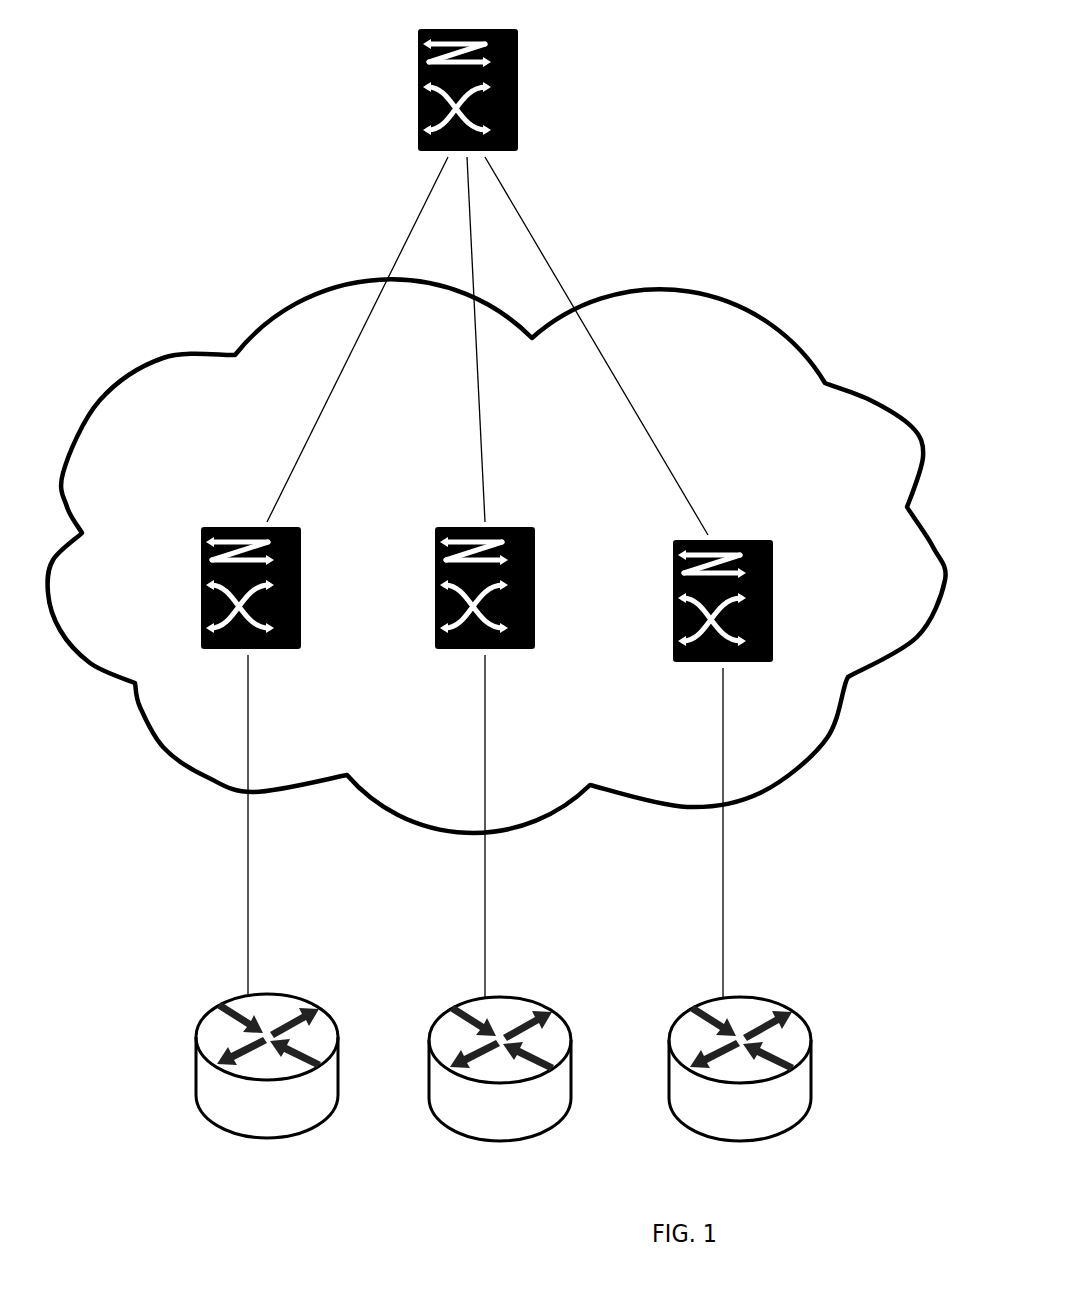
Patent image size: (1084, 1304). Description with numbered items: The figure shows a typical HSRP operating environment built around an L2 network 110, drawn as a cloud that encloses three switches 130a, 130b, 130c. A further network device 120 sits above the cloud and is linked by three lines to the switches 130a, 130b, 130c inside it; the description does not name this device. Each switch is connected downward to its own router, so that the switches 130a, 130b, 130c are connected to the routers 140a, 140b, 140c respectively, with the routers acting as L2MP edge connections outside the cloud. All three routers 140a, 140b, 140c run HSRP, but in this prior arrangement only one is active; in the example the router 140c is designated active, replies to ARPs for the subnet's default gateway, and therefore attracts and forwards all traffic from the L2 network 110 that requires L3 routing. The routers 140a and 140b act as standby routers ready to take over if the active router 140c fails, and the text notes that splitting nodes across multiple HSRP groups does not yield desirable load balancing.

The L2 network 110 is at (160, 356).
The switch 120 is at (413, 83).
The switch 130a is at (232, 530).
The switch 130b is at (450, 530).
The switch 130c is at (672, 570).
The router 140a is at (197, 1023).
The router 140b is at (450, 1003).
The router 140c is at (692, 1007).